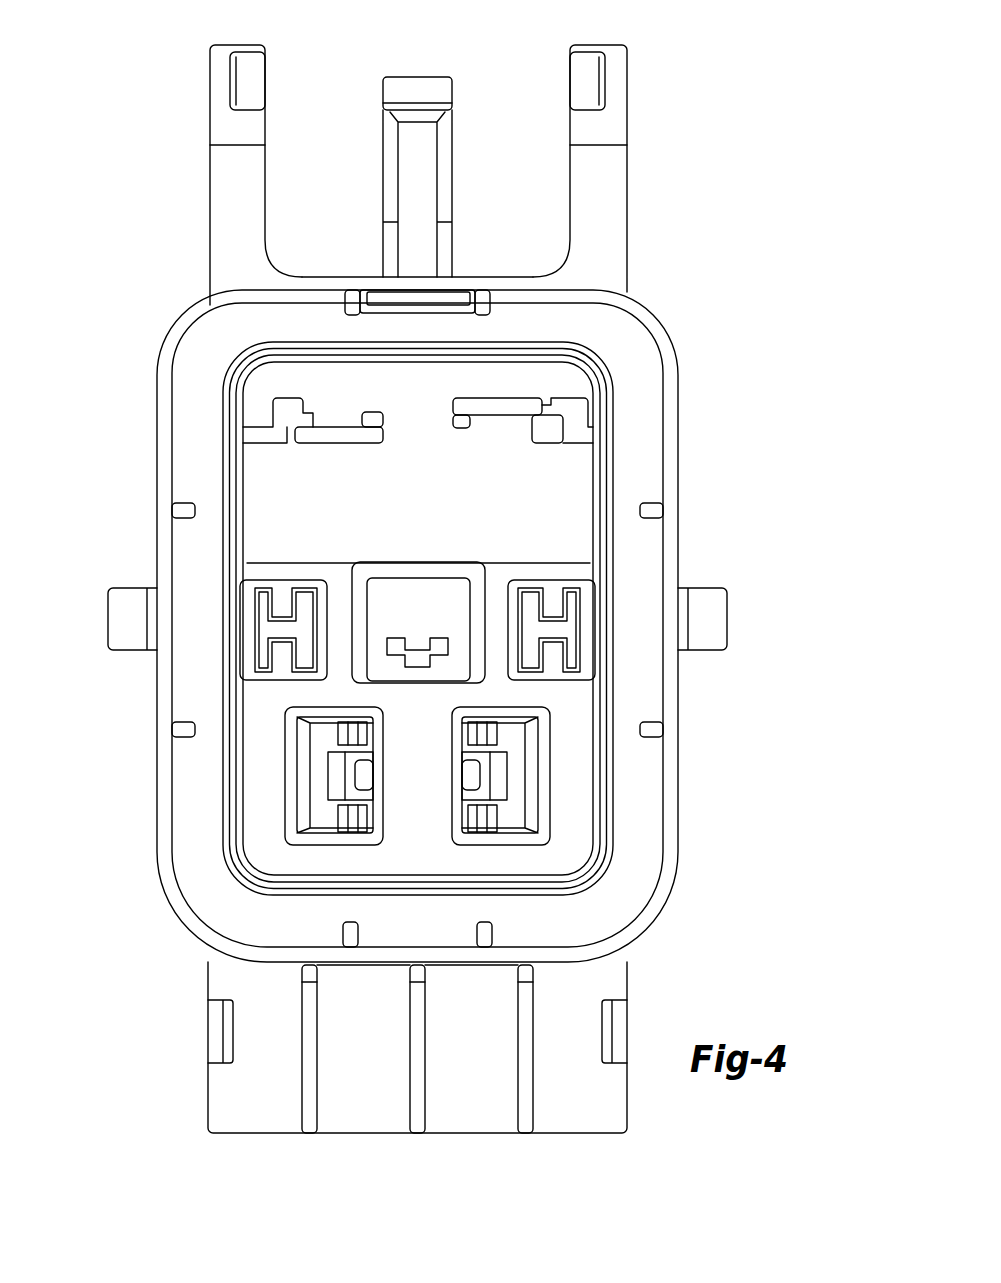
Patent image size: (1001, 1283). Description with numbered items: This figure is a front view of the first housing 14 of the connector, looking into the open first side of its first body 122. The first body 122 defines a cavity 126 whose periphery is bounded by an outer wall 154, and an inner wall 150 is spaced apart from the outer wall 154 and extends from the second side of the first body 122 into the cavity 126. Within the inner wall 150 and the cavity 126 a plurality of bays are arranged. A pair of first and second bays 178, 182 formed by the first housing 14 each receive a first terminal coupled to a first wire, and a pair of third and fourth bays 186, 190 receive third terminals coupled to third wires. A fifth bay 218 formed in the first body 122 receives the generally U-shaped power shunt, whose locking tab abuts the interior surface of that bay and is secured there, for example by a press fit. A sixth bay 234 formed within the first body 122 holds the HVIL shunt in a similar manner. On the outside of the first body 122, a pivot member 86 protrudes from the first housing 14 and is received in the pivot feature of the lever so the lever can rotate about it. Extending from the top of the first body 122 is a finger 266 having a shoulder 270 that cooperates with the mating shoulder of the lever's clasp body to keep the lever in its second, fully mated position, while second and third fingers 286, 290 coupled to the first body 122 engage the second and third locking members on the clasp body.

The first housing 14 is at (111, 97).
The pivot member 86 is at (728, 605).
The first body 122 is at (183, 325).
The cavity 126 is at (273, 485).
The inner wall 150 is at (602, 478).
The outer wall 154 is at (673, 502).
The first bay 178 is at (287, 781).
The second bay 182 is at (548, 780).
The third bay 186 is at (265, 682).
The fourth bay 190 is at (570, 682).
The fifth bay 218 is at (493, 408).
The sixth bay 234 is at (345, 588).
The finger 266 is at (399, 77).
The shoulder 270 is at (428, 90).
The second finger 286 is at (208, 78).
The third finger 290 is at (628, 183).